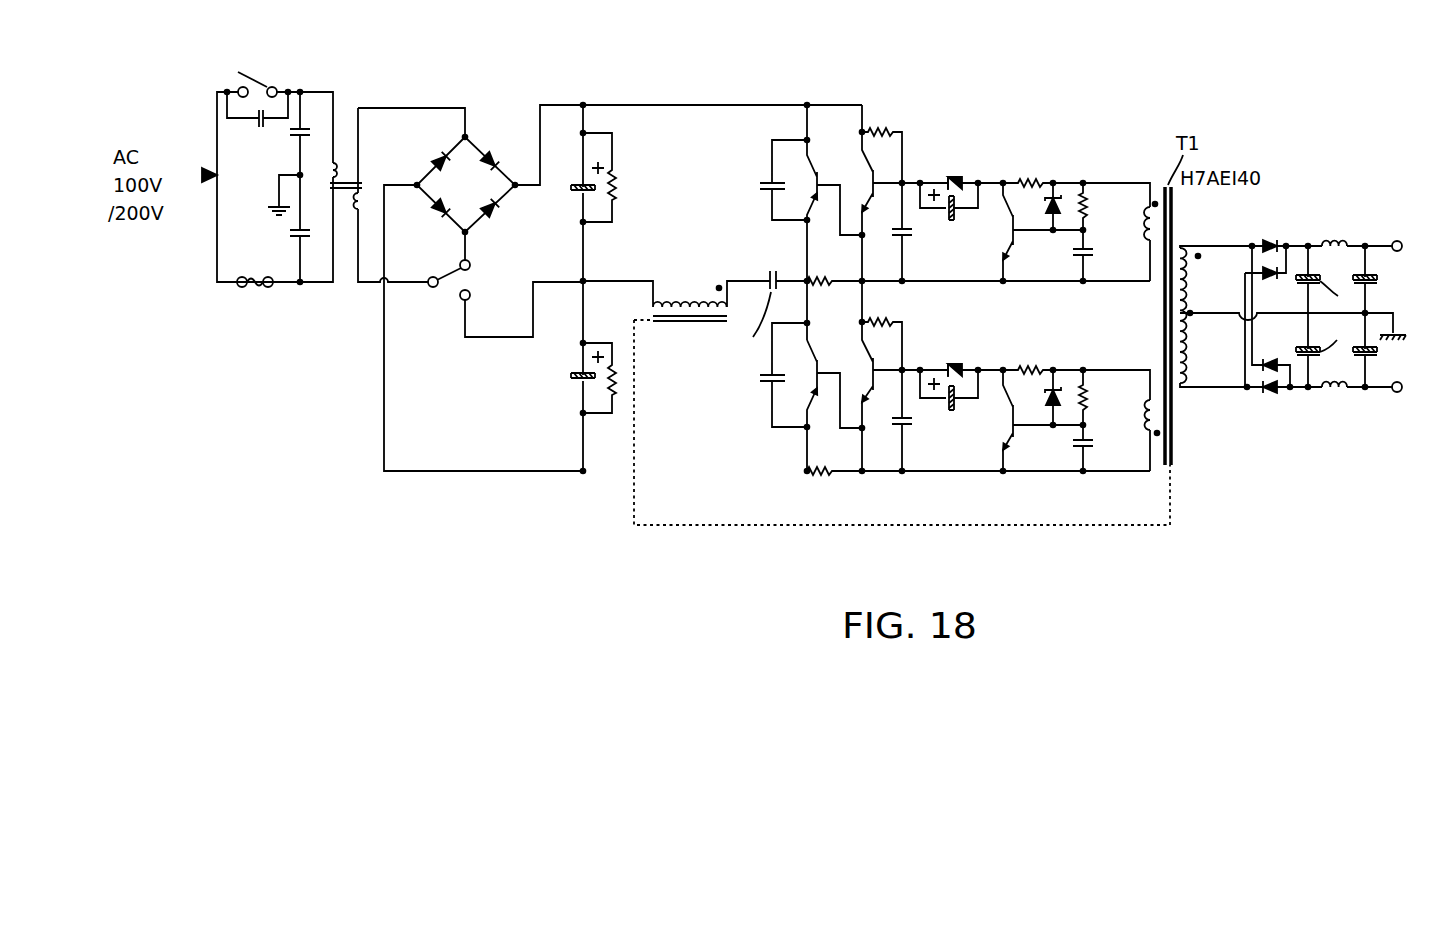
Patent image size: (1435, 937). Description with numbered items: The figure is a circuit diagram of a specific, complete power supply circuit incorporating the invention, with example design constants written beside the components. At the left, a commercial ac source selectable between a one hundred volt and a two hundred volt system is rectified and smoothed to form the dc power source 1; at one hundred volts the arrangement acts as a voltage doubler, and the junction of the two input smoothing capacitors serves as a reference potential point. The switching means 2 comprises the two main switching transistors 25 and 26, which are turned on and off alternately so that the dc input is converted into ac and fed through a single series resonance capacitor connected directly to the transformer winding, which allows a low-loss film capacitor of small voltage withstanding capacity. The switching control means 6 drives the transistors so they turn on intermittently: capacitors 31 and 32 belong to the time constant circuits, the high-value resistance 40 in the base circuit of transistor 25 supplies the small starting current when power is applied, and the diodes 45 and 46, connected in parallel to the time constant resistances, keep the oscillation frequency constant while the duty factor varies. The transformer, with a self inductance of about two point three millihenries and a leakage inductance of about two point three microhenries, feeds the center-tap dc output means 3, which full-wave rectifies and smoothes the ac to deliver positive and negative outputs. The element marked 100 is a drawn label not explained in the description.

The dc power source 1 is at (618, 514).
The switching means 2 is at (535, 68).
The dc output means 3 is at (1408, 422).
The switching control means 6 is at (848, 65).
The main switching transistor 25 is at (817, 172).
The main switching transistor 26 is at (812, 379).
The capacitor 31 is at (897, 231).
The capacitor 32 is at (897, 421).
The resistance 40 is at (886, 137).
The diode 45 is at (1058, 205).
The diode 46 is at (1052, 400).
The variable resistor (330) 100 is at (1073, 403).